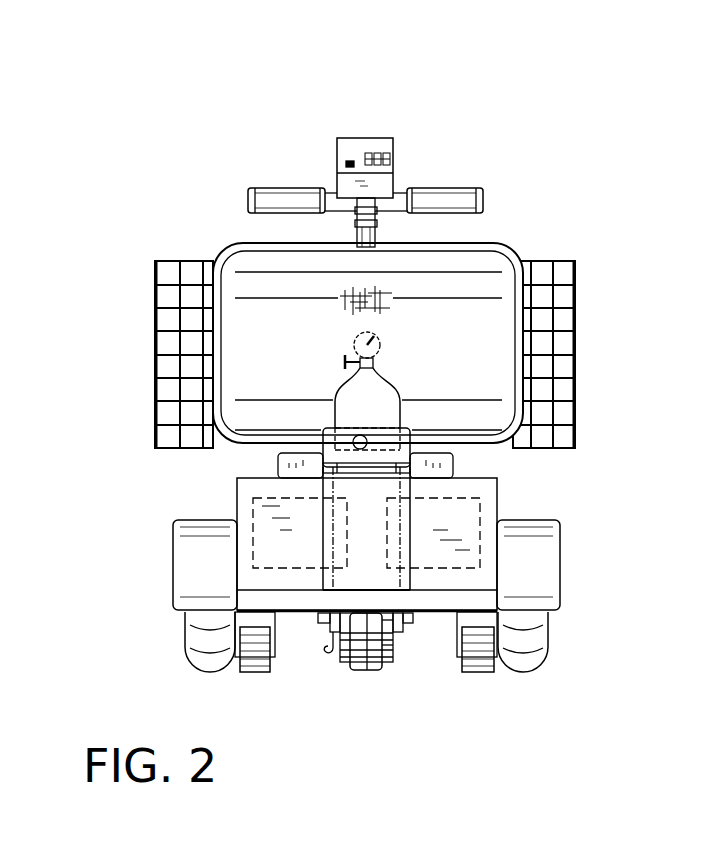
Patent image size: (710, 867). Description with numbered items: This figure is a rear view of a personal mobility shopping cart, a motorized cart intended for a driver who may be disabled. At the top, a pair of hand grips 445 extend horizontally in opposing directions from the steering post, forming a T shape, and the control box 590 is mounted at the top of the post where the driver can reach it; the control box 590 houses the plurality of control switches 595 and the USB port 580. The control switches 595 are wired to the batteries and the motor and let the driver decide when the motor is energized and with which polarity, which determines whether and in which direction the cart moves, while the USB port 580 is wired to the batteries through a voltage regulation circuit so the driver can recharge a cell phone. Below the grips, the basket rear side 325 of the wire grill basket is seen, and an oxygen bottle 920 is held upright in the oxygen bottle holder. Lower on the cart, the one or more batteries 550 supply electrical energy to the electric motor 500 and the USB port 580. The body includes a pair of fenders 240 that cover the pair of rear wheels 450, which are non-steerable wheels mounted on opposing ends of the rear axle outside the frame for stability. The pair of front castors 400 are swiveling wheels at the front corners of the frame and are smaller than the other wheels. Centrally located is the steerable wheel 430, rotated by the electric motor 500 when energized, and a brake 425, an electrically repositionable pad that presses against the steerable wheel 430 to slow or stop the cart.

The pair of hand grips 445 is at (457, 198).
The control box 590 is at (363, 138).
The plurality of control switches 595 is at (387, 157).
The USB port 580 is at (350, 165).
The basket rear side 325 is at (555, 307).
The oxygen bottle 920 is at (353, 408).
The one or more batteries 550 is at (387, 500).
The pair of fenders 240 is at (187, 560).
The pair of rear wheels 450 is at (202, 640).
The pair of front castors 400 is at (260, 663).
The brake 425 is at (333, 655).
The steerable wheel 430 is at (367, 670).
The electric motor 500 is at (395, 660).